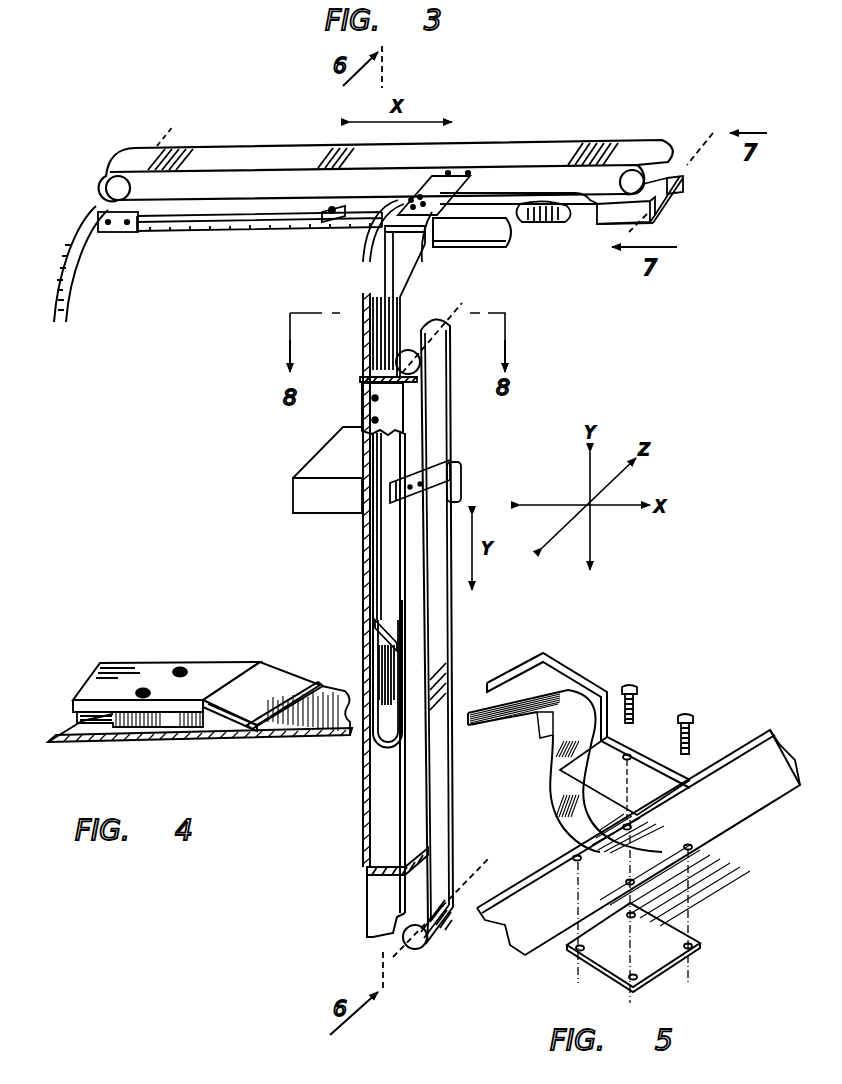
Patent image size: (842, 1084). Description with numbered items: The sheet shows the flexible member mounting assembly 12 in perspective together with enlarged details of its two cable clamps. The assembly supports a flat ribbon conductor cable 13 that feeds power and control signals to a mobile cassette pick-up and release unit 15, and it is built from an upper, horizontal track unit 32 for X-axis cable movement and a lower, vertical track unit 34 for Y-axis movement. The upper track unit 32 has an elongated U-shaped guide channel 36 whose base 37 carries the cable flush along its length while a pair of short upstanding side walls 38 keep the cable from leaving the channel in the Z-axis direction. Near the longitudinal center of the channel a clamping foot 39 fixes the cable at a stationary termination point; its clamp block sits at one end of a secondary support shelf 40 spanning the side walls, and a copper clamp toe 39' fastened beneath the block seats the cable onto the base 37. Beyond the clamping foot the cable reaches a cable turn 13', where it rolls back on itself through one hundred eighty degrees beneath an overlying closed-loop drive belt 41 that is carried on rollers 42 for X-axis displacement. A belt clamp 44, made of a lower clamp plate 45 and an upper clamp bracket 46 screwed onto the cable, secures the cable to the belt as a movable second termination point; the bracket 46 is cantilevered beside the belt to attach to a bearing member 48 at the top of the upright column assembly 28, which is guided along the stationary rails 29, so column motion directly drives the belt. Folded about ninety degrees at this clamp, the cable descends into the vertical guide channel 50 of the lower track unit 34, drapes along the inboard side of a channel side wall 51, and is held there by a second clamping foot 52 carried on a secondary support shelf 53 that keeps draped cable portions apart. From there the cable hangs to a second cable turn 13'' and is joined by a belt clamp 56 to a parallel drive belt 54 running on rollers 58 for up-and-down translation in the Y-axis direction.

In FIG. 3, the flexible member mounting assembly 12 is at (552, 124).
In FIG. 3, the conductor cable 13 is at (306, 491).
In FIG. 4, the conductor cable 13 is at (277, 734).
In FIG. 5, the conductor cable 13 is at (600, 798).
In FIG. 3, the cable turn 13' is at (613, 226).
In FIG. 3, the cable turn 13'' is at (340, 626).
In FIG. 3, the cassette pick-up and release unit 15 is at (290, 490).
In FIG. 3, the column assembly 28 is at (500, 430).
In FIG. 3, the stationary rails 29 is at (492, 238).
In FIG. 3, the upper track unit 32 is at (245, 240).
In FIG. 3, the lower track unit 34 is at (340, 570).
In FIG. 3, the guide channel 36 is at (684, 190).
In FIG. 4, the guide channel 36 is at (72, 718).
In FIG. 3, the base 37 is at (676, 200).
In FIG. 4, the base 37 is at (170, 745).
In FIG. 3, the side walls 38 is at (118, 233).
In FIG. 3, the clamping foot 39 is at (318, 233).
In FIG. 4, the clamping foot 39 is at (261, 673).
In FIG. 4, the clamp toe 39' is at (293, 680).
In FIG. 3, the secondary support shelf 40 is at (196, 220).
In FIG. 4, the secondary support shelf 40 is at (128, 680).
In FIG. 3, the drive belt 41 is at (262, 152).
In FIG. 5, the drive belt 41 is at (532, 897).
In FIG. 3, the rollers 42 is at (108, 188).
In FIG. 3, the belt clamp 44 is at (480, 180).
In FIG. 5, the lower clamp plate 45 is at (655, 955).
In FIG. 3, the upper clamp bracket 46 is at (428, 185).
In FIG. 5, the upper clamp bracket 46 is at (650, 773).
In FIG. 3, the bearing member 48 is at (440, 252).
In FIG. 3, the guide channel 50 is at (377, 896).
In FIG. 3, the channel side wall 51 is at (384, 823).
In FIG. 3, the clamping foot 52 is at (382, 634).
In FIG. 3, the secondary support shelf 53 is at (385, 544).
In FIG. 3, the drive belt 54 is at (420, 662).
In FIG. 3, the belt clamp 56 is at (415, 487).
In FIG. 3, the rollers 58 is at (418, 362).